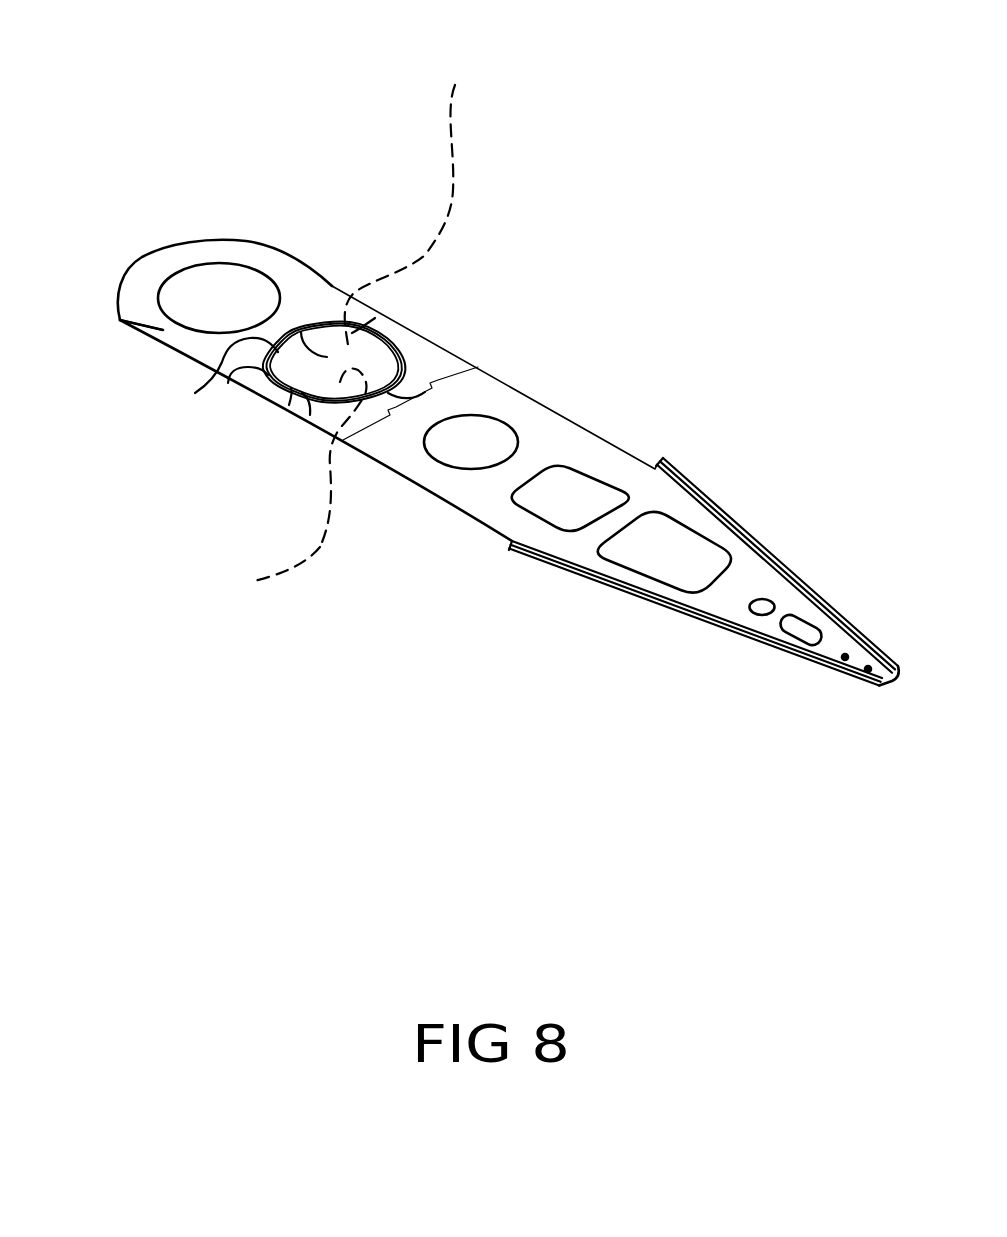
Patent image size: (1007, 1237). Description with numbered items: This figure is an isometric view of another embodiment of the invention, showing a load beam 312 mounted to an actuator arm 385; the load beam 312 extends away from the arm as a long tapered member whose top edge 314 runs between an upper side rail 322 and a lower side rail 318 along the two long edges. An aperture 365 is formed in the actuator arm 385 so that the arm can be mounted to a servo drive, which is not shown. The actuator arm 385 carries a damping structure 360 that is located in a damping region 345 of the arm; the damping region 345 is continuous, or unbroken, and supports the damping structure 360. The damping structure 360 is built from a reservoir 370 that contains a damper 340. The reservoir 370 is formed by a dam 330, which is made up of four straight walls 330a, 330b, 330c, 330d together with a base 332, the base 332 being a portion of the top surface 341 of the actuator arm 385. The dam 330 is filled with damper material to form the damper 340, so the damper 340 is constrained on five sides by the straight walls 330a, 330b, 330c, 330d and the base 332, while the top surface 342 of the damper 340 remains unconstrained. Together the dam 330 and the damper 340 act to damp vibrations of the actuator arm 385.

The load beam 312 is at (627, 445).
The top edge of load beam 314 is at (521, 395).
The lower side rail 318 is at (496, 538).
The upper side rail 322 is at (784, 567).
The dam 330 is at (228, 383).
The straight wall 330a is at (310, 415).
The straight wall 330b is at (195, 393).
The straight wall 330c is at (375, 318).
The straight wall 330d is at (425, 392).
The base 332 is at (250, 582).
The damper 340 is at (289, 405).
The top surface 341 is at (122, 320).
The top surface of damper 342 is at (301, 332).
The damping region 345 is at (455, 85).
The damping structure 360 is at (413, 354).
The aperture 365 is at (203, 268).
The reservoir 370 is at (389, 384).
The actuator arm 385 is at (281, 243).